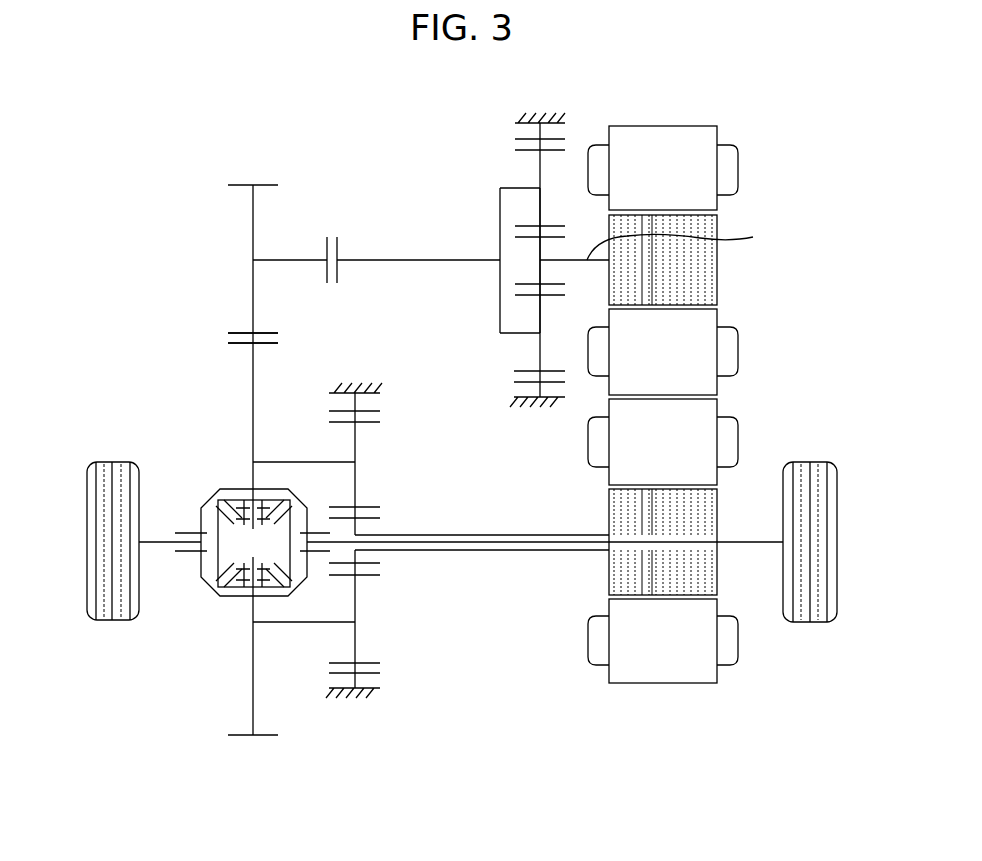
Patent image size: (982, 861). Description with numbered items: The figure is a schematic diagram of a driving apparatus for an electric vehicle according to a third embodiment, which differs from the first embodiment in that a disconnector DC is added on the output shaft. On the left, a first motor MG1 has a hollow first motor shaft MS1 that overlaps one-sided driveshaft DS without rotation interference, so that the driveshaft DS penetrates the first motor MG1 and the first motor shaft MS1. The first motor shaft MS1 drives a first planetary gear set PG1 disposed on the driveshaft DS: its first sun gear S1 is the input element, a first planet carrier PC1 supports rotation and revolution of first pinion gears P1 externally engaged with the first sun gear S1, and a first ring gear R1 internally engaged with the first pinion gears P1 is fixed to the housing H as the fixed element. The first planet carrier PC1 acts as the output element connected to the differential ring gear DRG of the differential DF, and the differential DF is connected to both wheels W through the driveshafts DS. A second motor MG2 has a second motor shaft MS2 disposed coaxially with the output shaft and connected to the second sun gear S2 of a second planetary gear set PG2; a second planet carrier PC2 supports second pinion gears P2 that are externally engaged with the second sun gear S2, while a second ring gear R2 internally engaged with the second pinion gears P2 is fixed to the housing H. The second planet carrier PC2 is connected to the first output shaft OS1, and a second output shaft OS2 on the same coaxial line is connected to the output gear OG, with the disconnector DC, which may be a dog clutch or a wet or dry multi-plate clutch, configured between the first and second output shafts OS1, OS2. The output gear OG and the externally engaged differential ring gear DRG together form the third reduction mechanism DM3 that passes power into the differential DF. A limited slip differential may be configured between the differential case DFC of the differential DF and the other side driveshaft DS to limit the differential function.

The third reduction mechanism DM3 is at (147, 306).
The output gear OG is at (228, 333).
The differential ring gear DRG is at (228, 343).
The second output shaft OS2 is at (296, 265).
The disconnector DC is at (331, 234).
The first output shaft OS1 is at (410, 265).
The second planetary gear set PG2 is at (499, 170).
The housing H is at (543, 112).
The second ring gear R2 is at (563, 138).
The second planet carrier PC2 is at (500, 206).
The second pinion gear P2 is at (543, 206).
The second sun gear S2 is at (553, 283).
The second motor shaft MS2 is at (688, 246).
The second motor MG2 is at (744, 165).
The first motor MG1 is at (744, 437).
The wheel W is at (113, 621).
The driveshaft DS is at (152, 545).
The differential DF is at (209, 596).
The differential case DFC is at (220, 496).
The first planetary gear set PG1 is at (384, 663).
The first planet carrier PC1 is at (282, 625).
The first pinion gear P1 is at (358, 632).
The first sun gear S1 is at (366, 567).
The first ring gear R1 is at (335, 676).
The first motor shaft MS1 is at (468, 534).